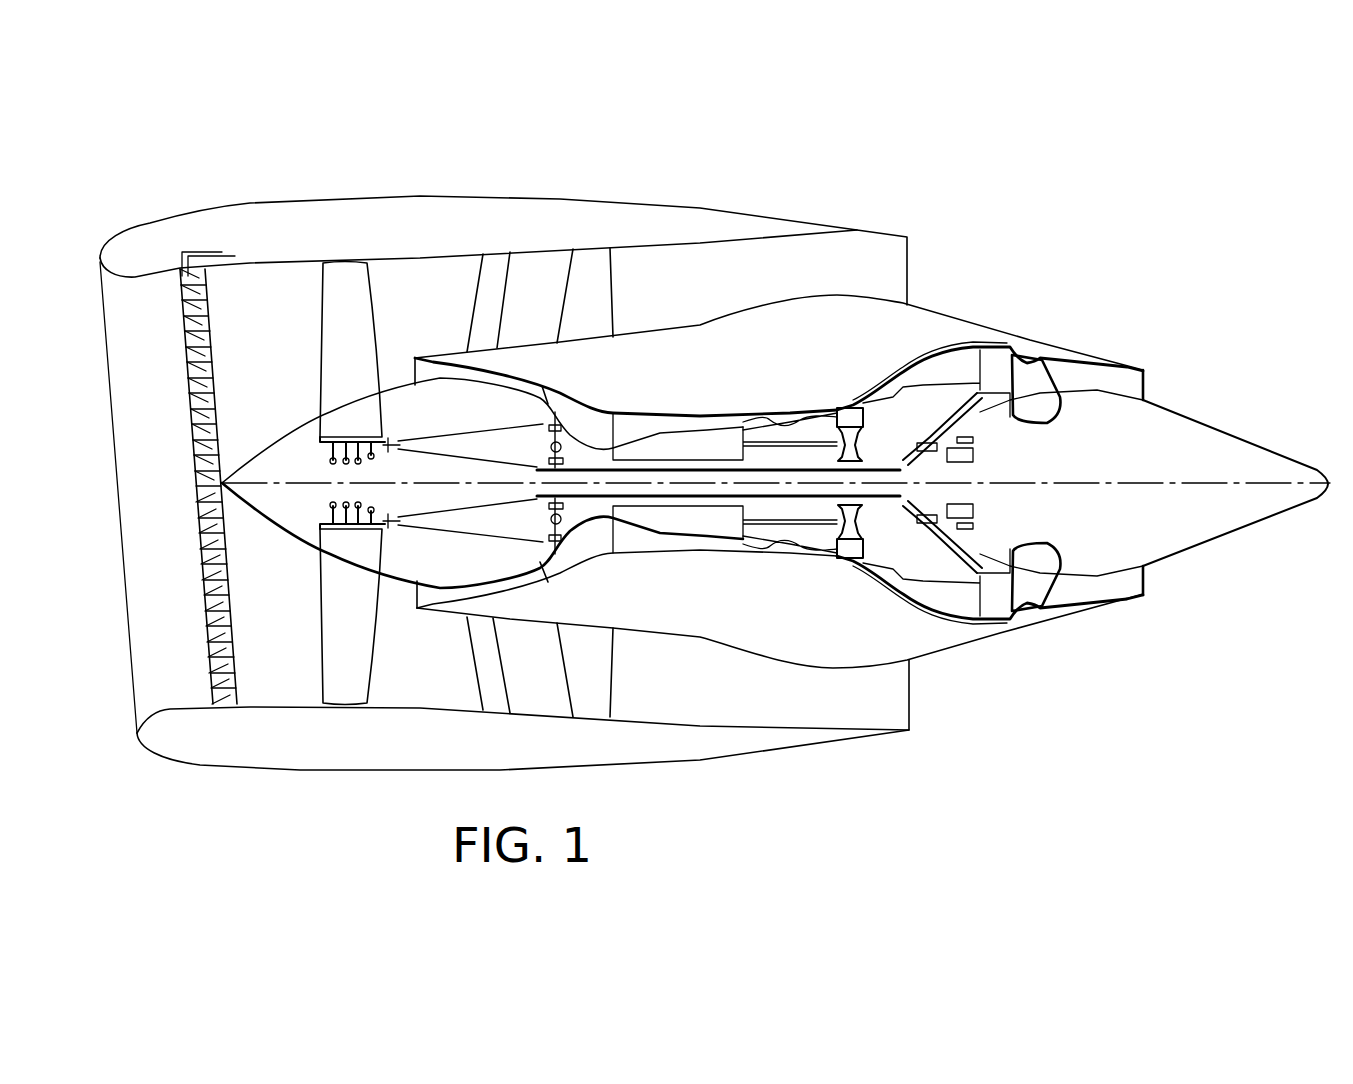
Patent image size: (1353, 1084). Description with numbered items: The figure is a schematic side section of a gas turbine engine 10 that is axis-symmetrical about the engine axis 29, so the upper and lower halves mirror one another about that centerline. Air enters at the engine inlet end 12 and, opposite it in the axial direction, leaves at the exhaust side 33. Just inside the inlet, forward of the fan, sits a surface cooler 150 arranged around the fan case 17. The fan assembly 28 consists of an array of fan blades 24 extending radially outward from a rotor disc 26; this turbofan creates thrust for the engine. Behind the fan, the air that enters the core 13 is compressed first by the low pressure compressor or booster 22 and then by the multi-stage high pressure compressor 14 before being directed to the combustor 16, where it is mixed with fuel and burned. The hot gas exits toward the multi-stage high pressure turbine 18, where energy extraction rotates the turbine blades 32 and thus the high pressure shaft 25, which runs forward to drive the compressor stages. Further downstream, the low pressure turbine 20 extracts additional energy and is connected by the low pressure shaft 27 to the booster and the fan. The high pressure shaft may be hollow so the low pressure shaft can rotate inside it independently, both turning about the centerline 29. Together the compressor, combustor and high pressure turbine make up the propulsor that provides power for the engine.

The gas turbine engine 10 is at (838, 180).
The engine inlet end 12 is at (92, 285).
The core 13 is at (714, 345).
The multi-stage high pressure compressor 14 is at (652, 403).
The combustor 16 is at (799, 403).
The fan case 17 is at (230, 268).
The multi-stage high pressure turbine 18 is at (862, 584).
The low pressure turbine 20 is at (910, 355).
The low pressure compressor or booster 22 is at (619, 405).
The fan blades 24 is at (335, 353).
The high pressure shaft 25 is at (757, 522).
The rotor disc 26 is at (315, 550).
The low pressure shaft 27 is at (930, 500).
The fan assembly 28 is at (330, 622).
The engine axis 29 is at (1147, 482).
The turbine blades 32 is at (888, 462).
The exhaust side 33 is at (958, 268).
The surface cooler 150 is at (158, 467).